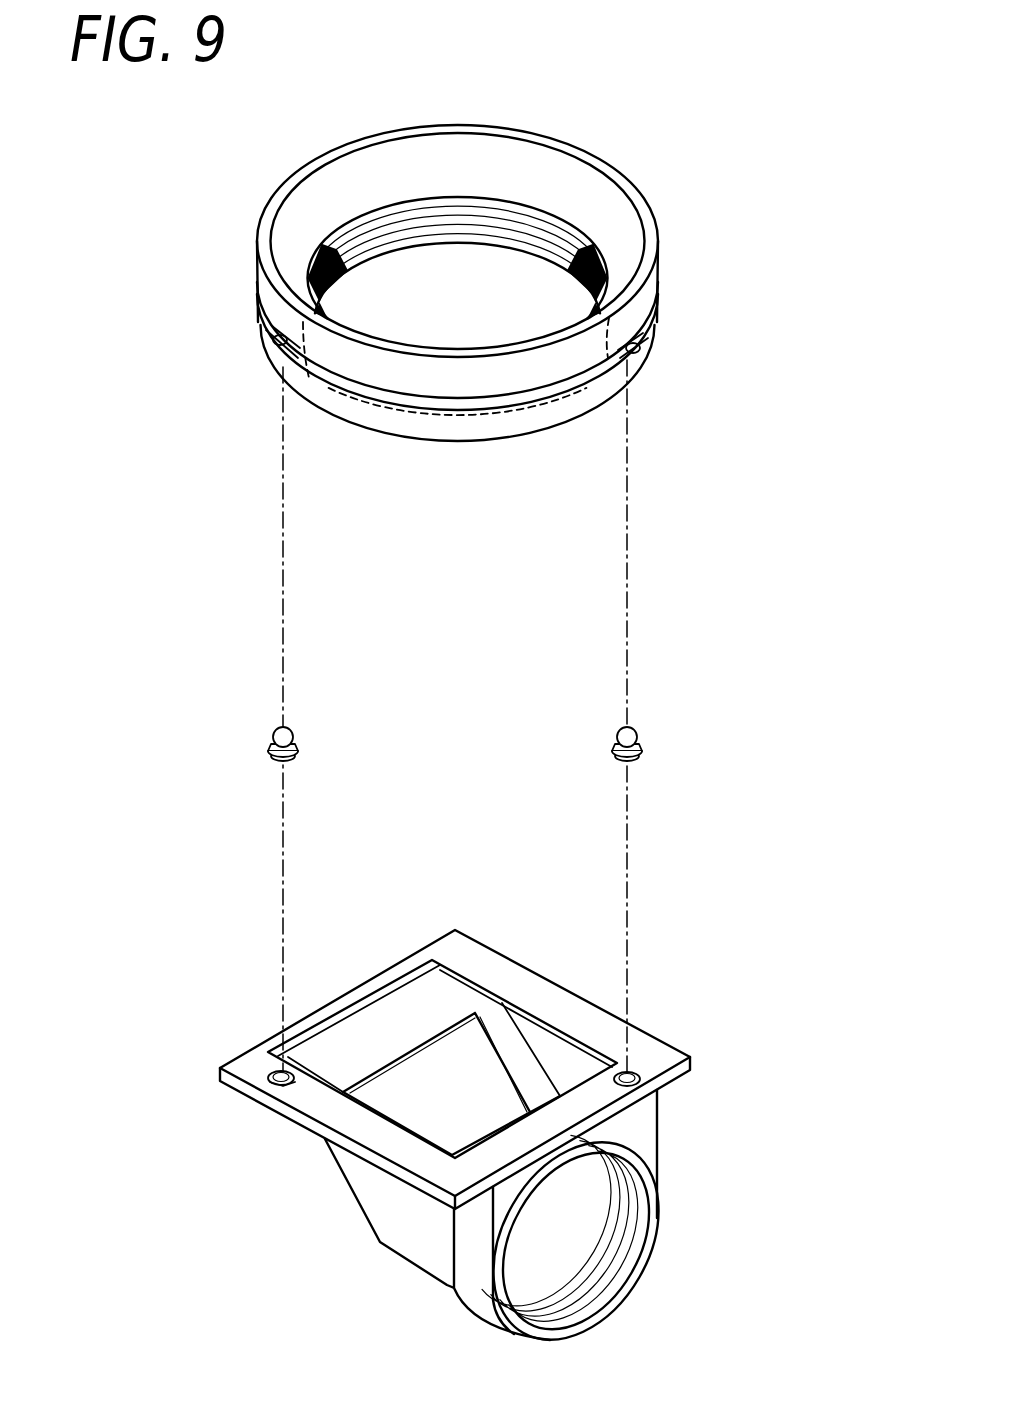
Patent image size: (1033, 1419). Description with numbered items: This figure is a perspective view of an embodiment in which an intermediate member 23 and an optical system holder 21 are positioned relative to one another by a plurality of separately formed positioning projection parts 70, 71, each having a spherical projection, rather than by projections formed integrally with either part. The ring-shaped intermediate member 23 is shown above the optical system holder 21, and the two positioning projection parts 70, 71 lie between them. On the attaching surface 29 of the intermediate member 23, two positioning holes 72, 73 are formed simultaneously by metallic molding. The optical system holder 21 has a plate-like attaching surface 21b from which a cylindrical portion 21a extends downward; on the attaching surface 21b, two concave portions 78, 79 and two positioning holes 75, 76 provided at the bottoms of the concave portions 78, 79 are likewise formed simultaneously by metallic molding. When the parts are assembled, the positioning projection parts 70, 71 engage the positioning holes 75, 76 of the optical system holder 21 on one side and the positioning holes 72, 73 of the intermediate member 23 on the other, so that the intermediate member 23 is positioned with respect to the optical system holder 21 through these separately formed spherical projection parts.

The intermediate member 23 is at (486, 315).
The attaching surface 29 is at (366, 416).
The positioning hole 72 is at (264, 352).
The positioning hole 73 is at (648, 358).
The positioning projection part 70 is at (268, 742).
The positioning projection part 71 is at (641, 742).
The optical system holder 21 is at (495, 1149).
The cylindrical portion 21a is at (640, 1122).
The attaching surface 21b is at (436, 1069).
The positioning hole 75 is at (265, 1082).
The positioning hole 76 is at (640, 1068).
The concave portion 78 is at (285, 1088).
The concave portion 79 is at (596, 1050).